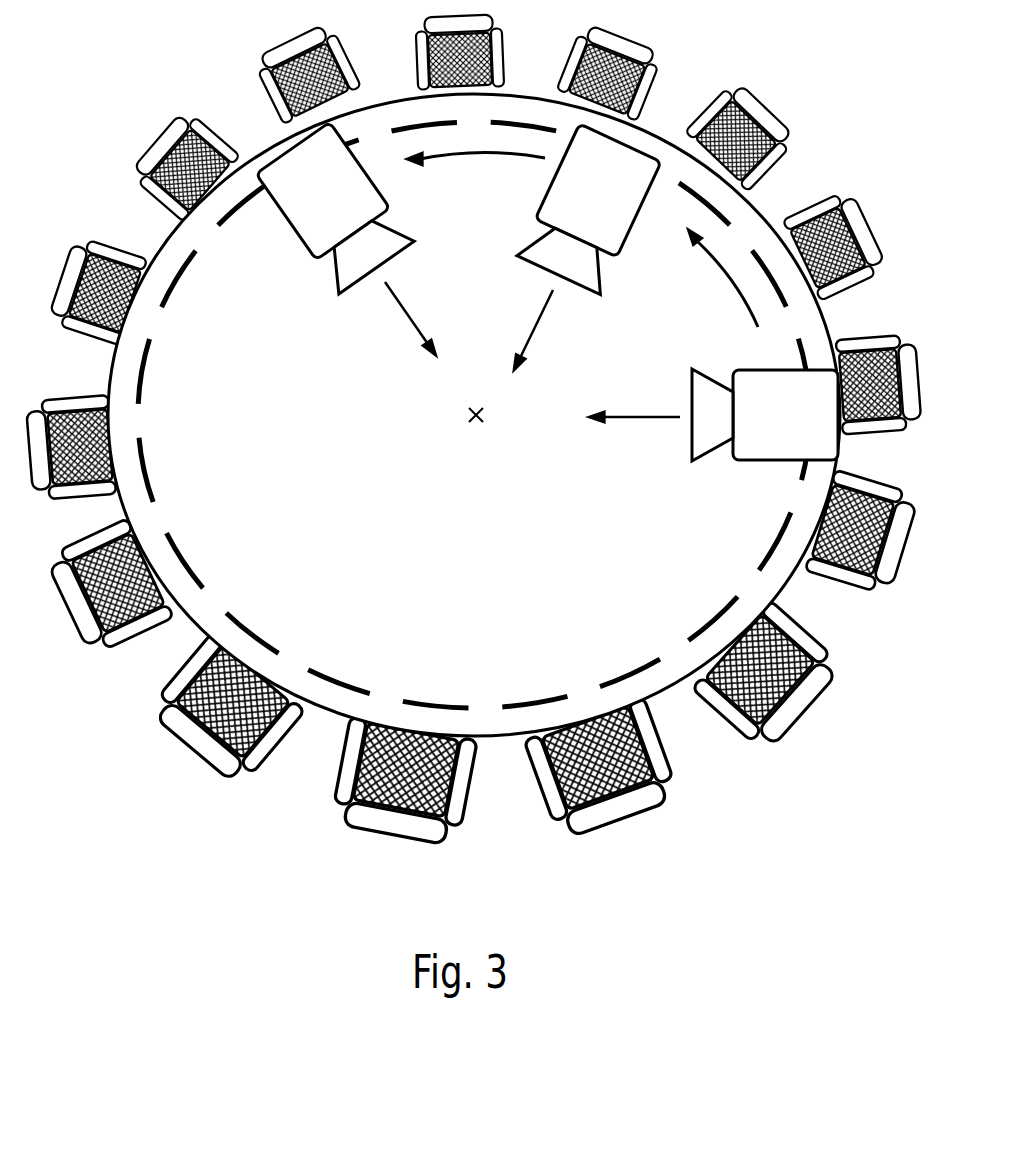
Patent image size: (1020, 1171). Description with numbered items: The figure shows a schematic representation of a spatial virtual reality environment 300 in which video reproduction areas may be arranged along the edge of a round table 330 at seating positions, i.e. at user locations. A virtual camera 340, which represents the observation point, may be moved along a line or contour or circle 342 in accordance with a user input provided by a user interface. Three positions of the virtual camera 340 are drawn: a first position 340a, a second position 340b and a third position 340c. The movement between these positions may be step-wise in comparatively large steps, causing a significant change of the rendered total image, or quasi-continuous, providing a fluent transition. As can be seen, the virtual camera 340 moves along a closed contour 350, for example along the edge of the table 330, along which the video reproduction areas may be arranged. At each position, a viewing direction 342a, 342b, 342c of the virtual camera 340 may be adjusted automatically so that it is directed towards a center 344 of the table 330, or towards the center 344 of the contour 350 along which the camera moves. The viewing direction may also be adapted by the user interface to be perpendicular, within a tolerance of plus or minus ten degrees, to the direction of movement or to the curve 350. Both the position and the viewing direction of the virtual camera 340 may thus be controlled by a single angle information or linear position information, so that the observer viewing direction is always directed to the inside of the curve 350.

The spatial virtual reality environment 300 is at (204, 848).
The table 330 is at (537, 95).
The virtual camera 340 is at (793, 425).
The first position of the virtual camera 340a is at (760, 463).
The second position of the virtual camera 340b is at (633, 235).
The third position of the virtual camera 340c is at (280, 150).
The line or contour or circle 342 is at (733, 223).
The viewing direction of the virtual camera 342a is at (633, 420).
The viewing direction of the virtual camera 342b is at (538, 320).
The viewing direction of the virtual camera 342c is at (402, 313).
The center 344 is at (470, 430).
The line or closed contour 350 is at (780, 548).